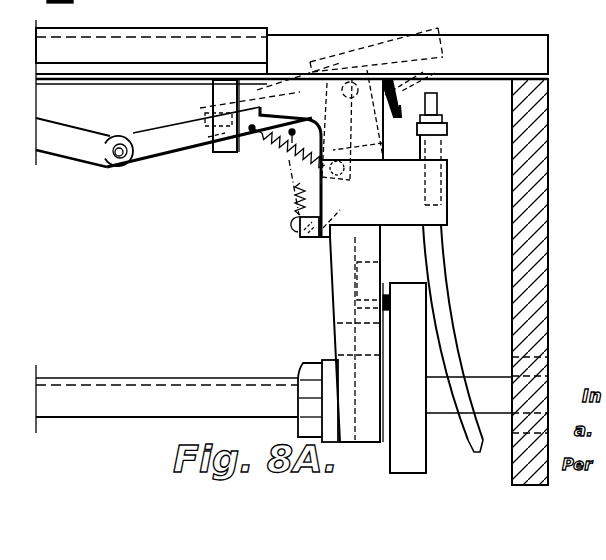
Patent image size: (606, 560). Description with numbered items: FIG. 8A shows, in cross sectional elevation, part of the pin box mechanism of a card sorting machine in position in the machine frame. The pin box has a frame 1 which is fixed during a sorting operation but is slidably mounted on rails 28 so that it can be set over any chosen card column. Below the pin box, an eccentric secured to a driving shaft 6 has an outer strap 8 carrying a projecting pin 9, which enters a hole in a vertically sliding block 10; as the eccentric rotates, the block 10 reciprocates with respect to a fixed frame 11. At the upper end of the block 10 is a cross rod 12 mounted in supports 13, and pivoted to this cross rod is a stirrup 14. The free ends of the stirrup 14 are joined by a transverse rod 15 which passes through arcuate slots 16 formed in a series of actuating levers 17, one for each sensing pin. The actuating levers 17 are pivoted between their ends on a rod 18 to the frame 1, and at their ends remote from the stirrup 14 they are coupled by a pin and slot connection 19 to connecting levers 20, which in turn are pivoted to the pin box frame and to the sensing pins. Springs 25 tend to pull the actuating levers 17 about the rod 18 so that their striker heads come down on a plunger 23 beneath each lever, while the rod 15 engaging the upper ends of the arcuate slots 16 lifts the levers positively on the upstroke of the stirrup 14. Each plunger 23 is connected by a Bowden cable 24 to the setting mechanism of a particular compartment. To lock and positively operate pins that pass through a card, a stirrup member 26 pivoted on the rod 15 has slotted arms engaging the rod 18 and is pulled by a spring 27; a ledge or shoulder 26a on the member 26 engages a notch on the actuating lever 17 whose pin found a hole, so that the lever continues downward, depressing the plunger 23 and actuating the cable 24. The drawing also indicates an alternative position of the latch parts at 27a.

The frame 1 is at (153, 40).
The rails 28 is at (304, 45).
The connecting levers 20 is at (68, 145).
The pin and slot connection 19 is at (118, 158).
The rod 18 is at (213, 143).
The stirrup member 26 is at (250, 132).
The spring 27 is at (300, 143).
The actuating levers 17 is at (282, 145).
The cross rod 12 is at (322, 181).
The springs 25 is at (291, 207).
The supports 13 is at (303, 234).
The stirrup 14 is at (373, 153).
The plunger 23 is at (437, 97).
The arcuate slots 16 is at (400, 80).
The transverse rod 15 is at (385, 62).
The ledge or shoulder 26a is at (437, 72).
The latch alternate position 27a is at (423, 72).
The sliding block 10 is at (357, 262).
The projecting pin 9 is at (367, 295).
The outer strap 8 is at (417, 452).
The Bowden cable 24 is at (433, 298).
The fixed frame 11 is at (377, 437).
The driving shaft 6 is at (177, 393).